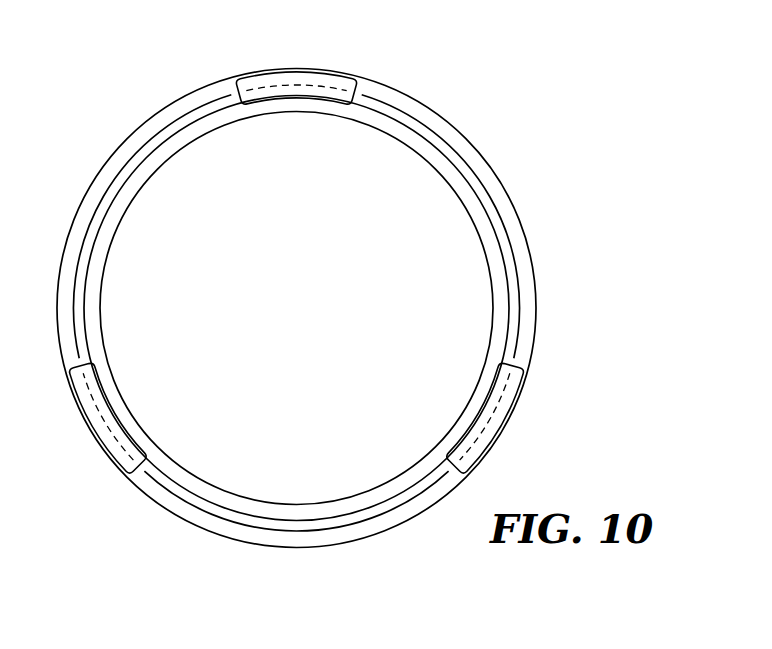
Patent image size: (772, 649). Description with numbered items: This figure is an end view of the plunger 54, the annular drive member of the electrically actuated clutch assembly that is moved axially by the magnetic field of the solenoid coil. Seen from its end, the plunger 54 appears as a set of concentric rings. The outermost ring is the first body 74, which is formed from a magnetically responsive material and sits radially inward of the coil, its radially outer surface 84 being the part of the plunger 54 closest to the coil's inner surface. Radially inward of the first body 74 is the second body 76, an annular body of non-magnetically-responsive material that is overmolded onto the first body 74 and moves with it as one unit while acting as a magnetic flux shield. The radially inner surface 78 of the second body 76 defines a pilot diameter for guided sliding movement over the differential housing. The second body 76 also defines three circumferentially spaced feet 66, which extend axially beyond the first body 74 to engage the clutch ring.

The plunger 54 is at (363, 281).
The feet 66 is at (335, 82).
The first body 74 is at (530, 322).
The second body 76 is at (510, 290).
The radially inner surface 78 is at (490, 262).
The radially outer surface 84 is at (493, 163).